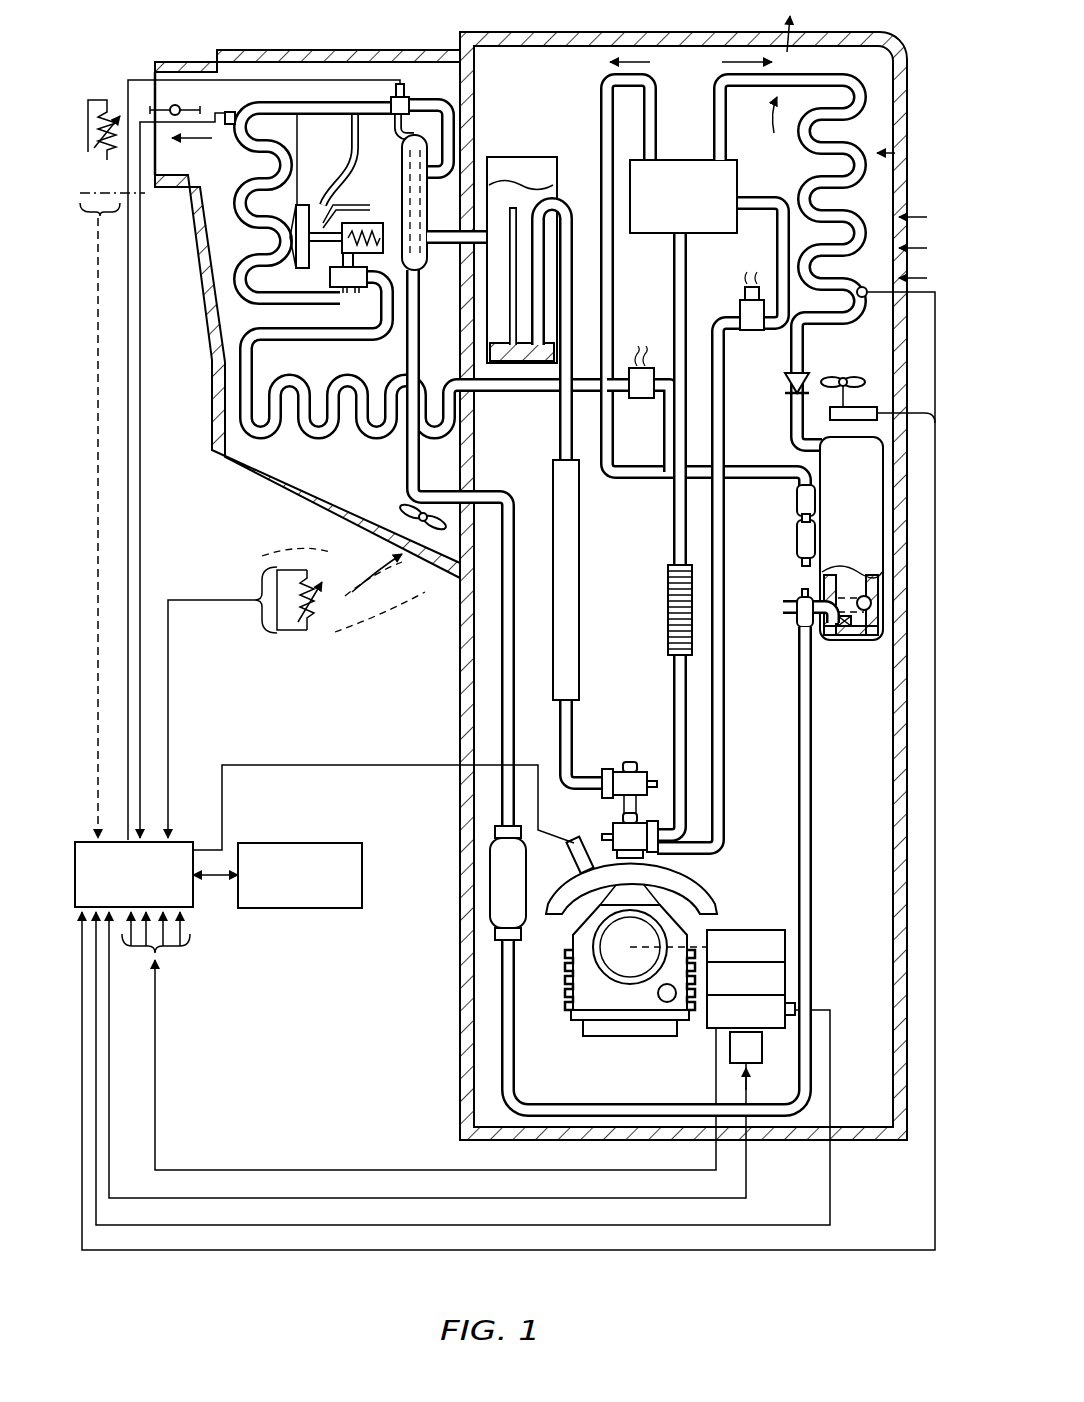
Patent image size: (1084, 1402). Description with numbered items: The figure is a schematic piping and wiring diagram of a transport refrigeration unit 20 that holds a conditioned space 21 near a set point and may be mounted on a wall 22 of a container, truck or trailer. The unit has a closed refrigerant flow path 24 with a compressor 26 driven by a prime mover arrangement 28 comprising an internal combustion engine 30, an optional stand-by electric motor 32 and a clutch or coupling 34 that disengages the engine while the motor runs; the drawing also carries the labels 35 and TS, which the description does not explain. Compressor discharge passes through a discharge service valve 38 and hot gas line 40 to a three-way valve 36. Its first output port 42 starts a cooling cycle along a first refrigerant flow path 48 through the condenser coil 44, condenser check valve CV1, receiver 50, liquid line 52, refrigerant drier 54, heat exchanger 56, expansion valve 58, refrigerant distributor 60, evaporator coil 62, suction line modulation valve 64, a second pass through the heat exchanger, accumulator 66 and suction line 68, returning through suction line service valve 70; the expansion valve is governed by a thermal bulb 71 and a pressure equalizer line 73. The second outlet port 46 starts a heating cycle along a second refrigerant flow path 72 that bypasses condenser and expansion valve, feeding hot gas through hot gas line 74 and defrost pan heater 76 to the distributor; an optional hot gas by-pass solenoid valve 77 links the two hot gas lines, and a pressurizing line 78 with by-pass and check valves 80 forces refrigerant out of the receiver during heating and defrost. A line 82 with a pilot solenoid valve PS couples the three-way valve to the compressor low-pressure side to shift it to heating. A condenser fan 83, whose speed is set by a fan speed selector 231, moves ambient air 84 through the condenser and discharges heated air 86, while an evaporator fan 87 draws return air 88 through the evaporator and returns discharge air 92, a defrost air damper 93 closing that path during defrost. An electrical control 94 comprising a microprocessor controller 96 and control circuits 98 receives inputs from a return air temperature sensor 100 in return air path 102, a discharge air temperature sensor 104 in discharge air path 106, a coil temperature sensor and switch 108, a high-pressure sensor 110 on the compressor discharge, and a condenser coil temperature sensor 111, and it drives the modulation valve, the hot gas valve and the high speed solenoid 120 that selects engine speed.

The transport refrigeration unit 20 is at (370, 1294).
The conditioned space 21 is at (264, 536).
The wall 22 is at (480, 130).
The closed fluid refrigerant flow path 24 is at (667, 537).
The refrigerant compressor 26 is at (573, 985).
The prime mover arrangement 28 is at (750, 994).
The internal combustion engine 30 is at (707, 1026).
The stand-by electric motor 32 is at (785, 946).
The clutch or coupling 34 is at (785, 977).
The engine connector 35 is at (795, 1007).
The three-way valve 36 is at (670, 140).
The discharge service valve 38 is at (622, 823).
The hot gas line 40 is at (672, 485).
The first output port 42 is at (733, 160).
The condenser coil 44 is at (806, 172).
The second outlet port 46 is at (643, 158).
The first refrigerant flow path 48 is at (732, 62).
The receiver 50 is at (830, 641).
The liquid line 52 is at (813, 770).
The refrigerant drier 54 is at (490, 862).
The heat exchanger 56 is at (415, 272).
The expansion valve 58 is at (335, 288).
The refrigerant distributor 60 is at (417, 300).
The evaporator coil 62 is at (235, 222).
The controllable suction line modulation valve 64 is at (406, 92).
The accumulator 66 is at (510, 157).
The suction line 68 is at (558, 434).
The suction line service valve 70 is at (629, 772).
The thermal bulb 71 is at (337, 80).
The second refrigerant flow path 72 is at (645, 62).
The pressure equalizer line 73 is at (353, 162).
The hot gas line 74 is at (606, 290).
The defrost pan heater 76 is at (328, 436).
The hot gas by-pass solenoid valve 77 is at (646, 368).
The by-pass or pressurizing line 78 is at (660, 465).
The by-pass and check valves 80 is at (797, 541).
The conduit or line 82 is at (724, 560).
The condenser fan or blower 83 is at (840, 378).
The ambient air 84 is at (899, 219).
The heated air 86 is at (788, 24).
The evaporator fan or blower 87 is at (404, 508).
The return air 88 is at (376, 582).
The discharge air 92 is at (208, 142).
The defrost air damper 93 is at (175, 104).
The electrical control 94 is at (249, 816).
The microprocessor based controller 96 is at (194, 846).
The electrical control circuits and components 98 is at (300, 843).
The return air temperature sensor 100 is at (309, 622).
The return air path 102 is at (438, 586).
The discharge air temperature sensor 104 is at (112, 122).
The discharge air path 106 is at (88, 100).
The coil temperature sensor and switch 108 is at (228, 111).
The refrigerant pressure sensor or high pressure cut out 110 is at (574, 851).
The condenser coil temperature sensor 111 is at (865, 298).
The throttle or high speed solenoid 120 is at (762, 1055).
The condenser fan speed selector 231 is at (830, 413).
The pilot solenoid valve PS is at (747, 300).
The one-way condenser check valve CV1 is at (787, 383).
The engine temperature sensor TS is at (746, 1047).